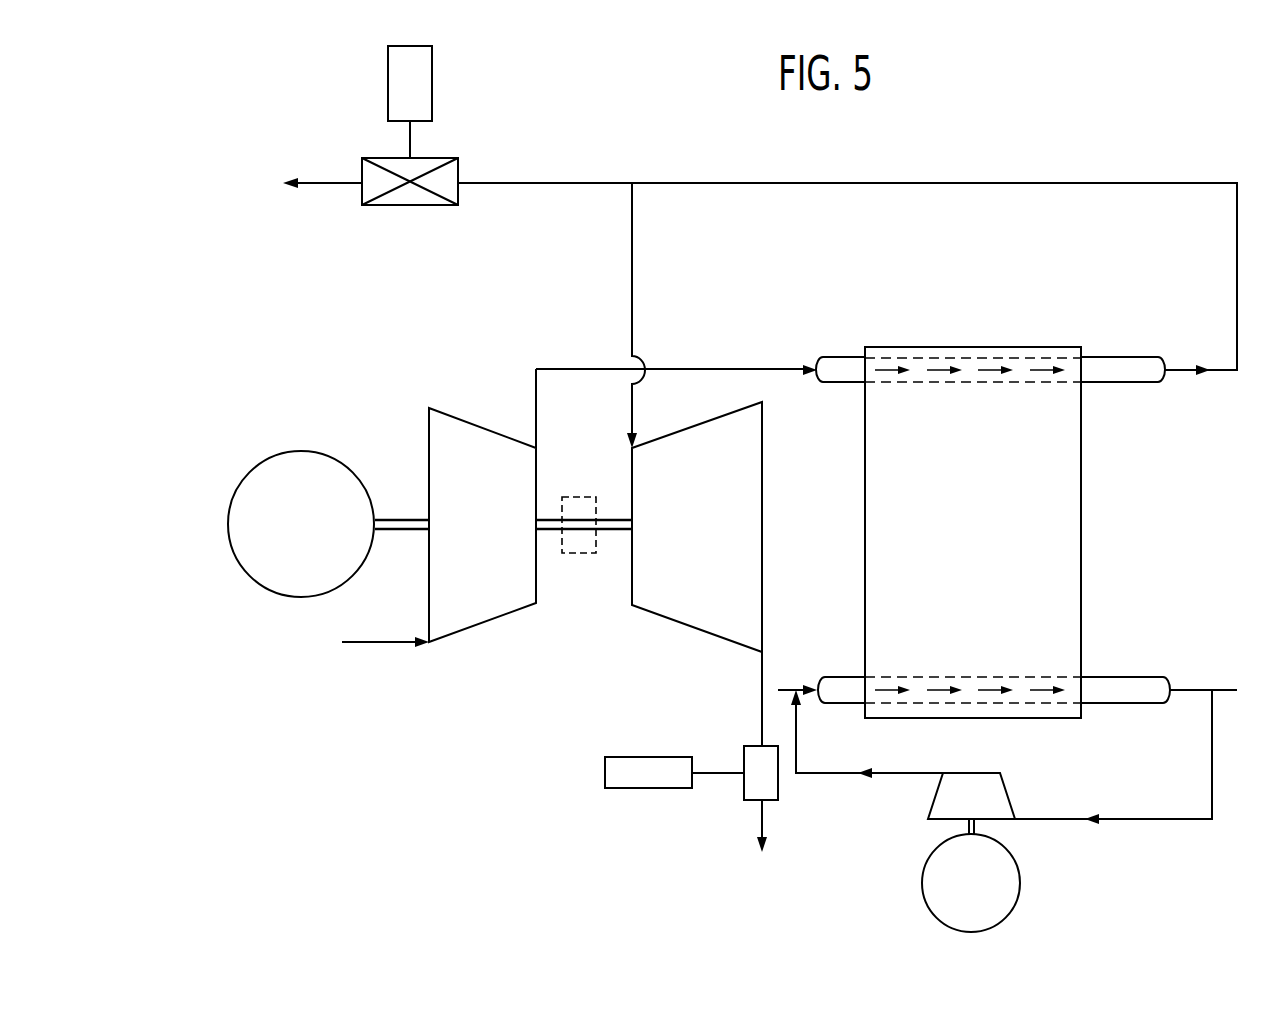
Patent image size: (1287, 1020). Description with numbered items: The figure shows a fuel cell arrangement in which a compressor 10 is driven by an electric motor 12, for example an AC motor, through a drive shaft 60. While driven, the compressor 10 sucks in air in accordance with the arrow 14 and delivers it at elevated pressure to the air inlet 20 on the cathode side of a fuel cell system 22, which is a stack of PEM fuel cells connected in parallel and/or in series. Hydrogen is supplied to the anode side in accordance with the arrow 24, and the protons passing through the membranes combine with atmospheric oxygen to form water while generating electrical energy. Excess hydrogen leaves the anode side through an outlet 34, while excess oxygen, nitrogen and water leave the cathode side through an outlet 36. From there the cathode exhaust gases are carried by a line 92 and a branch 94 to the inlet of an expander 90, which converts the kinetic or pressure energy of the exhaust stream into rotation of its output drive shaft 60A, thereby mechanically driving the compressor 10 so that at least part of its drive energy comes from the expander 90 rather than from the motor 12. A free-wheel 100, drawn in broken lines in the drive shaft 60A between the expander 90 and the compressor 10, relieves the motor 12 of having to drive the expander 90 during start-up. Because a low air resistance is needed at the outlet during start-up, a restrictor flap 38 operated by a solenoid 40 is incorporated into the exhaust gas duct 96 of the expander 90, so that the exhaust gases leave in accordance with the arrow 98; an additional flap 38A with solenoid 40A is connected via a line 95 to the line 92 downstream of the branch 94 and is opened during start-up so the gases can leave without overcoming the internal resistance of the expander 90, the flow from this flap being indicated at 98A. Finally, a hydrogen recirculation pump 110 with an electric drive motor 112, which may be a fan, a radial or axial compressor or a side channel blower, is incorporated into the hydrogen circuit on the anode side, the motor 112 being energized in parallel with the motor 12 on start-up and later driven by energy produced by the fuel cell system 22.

The compressor 10 is at (437, 430).
The electric motor 12 is at (257, 567).
The arrow 14 is at (388, 645).
The air inlet 20 is at (770, 369).
The fuel cell system 22 is at (1083, 545).
The arrow 24 is at (833, 683).
The outlet 34 is at (1138, 685).
The outlet 36 is at (1147, 373).
The restrictor flap 38 is at (778, 783).
The additional flap 38A is at (418, 207).
The solenoid 40 is at (660, 788).
The solenoid 40A is at (432, 78).
The drive shaft 60 is at (403, 532).
The output drive shaft 60A is at (614, 527).
The expander 90 is at (697, 605).
The line 92 is at (1013, 186).
The branch 94 is at (632, 255).
The line 95 is at (555, 181).
The exhaust gas duct 96 is at (760, 708).
The arrow 98 is at (768, 813).
The exhaust outlet 98A is at (320, 185).
The free-wheel 100 is at (578, 497).
The hydrogen recirculation pump 110 is at (997, 787).
The electric drive motor 112 is at (1005, 887).